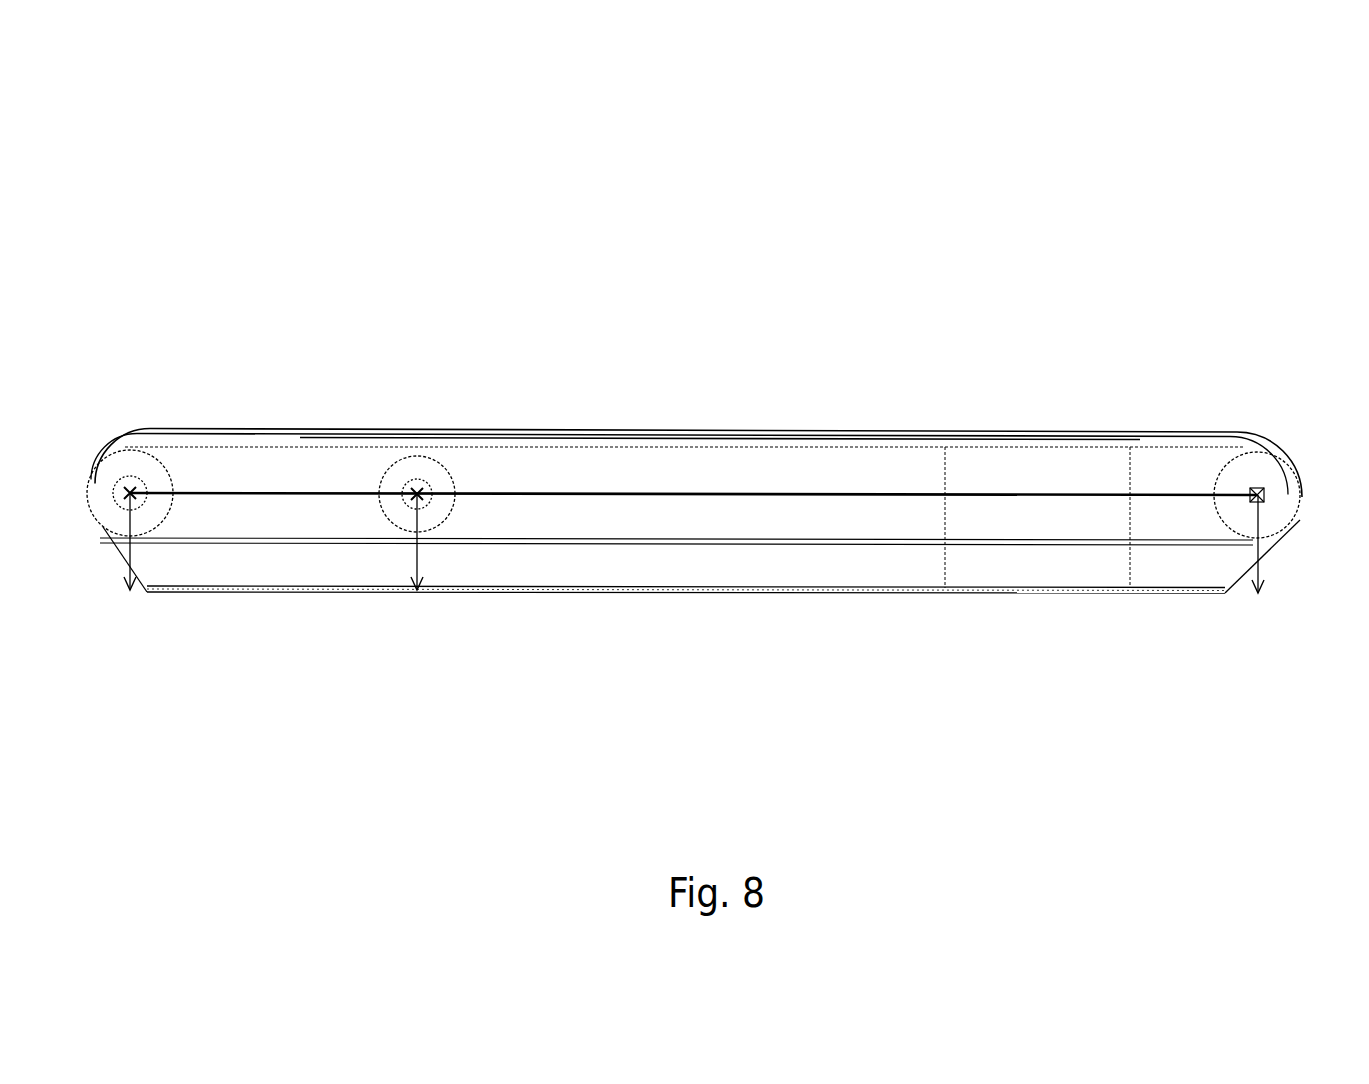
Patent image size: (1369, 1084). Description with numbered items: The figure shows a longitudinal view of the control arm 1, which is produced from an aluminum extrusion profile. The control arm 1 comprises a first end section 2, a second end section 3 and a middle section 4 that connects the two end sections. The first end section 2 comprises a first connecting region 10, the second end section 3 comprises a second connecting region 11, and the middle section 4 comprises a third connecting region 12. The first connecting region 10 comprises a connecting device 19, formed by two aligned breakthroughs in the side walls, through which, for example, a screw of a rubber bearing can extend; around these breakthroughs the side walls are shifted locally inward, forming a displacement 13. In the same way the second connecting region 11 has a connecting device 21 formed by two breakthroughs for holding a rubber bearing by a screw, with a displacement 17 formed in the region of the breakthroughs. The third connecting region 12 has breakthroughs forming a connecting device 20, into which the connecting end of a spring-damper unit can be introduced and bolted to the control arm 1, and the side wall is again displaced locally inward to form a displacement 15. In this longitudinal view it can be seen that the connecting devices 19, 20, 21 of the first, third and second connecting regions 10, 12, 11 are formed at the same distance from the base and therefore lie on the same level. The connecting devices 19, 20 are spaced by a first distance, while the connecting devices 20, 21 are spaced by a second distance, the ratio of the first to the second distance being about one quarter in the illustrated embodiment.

The control arm 1 is at (678, 310).
The first end section 2 is at (107, 422).
The second end section 3 is at (1295, 450).
The middle section 4 is at (720, 362).
The first connecting region 10 is at (213, 553).
The second connecting region 11 is at (1177, 563).
The third connecting region 12 is at (526, 461).
The displacement 13 is at (148, 508).
The displacement 15 is at (405, 473).
The displacement 17 is at (1280, 512).
The connecting device 19 is at (131, 493).
The connecting device 20 is at (428, 503).
The connecting device 21 is at (1253, 485).